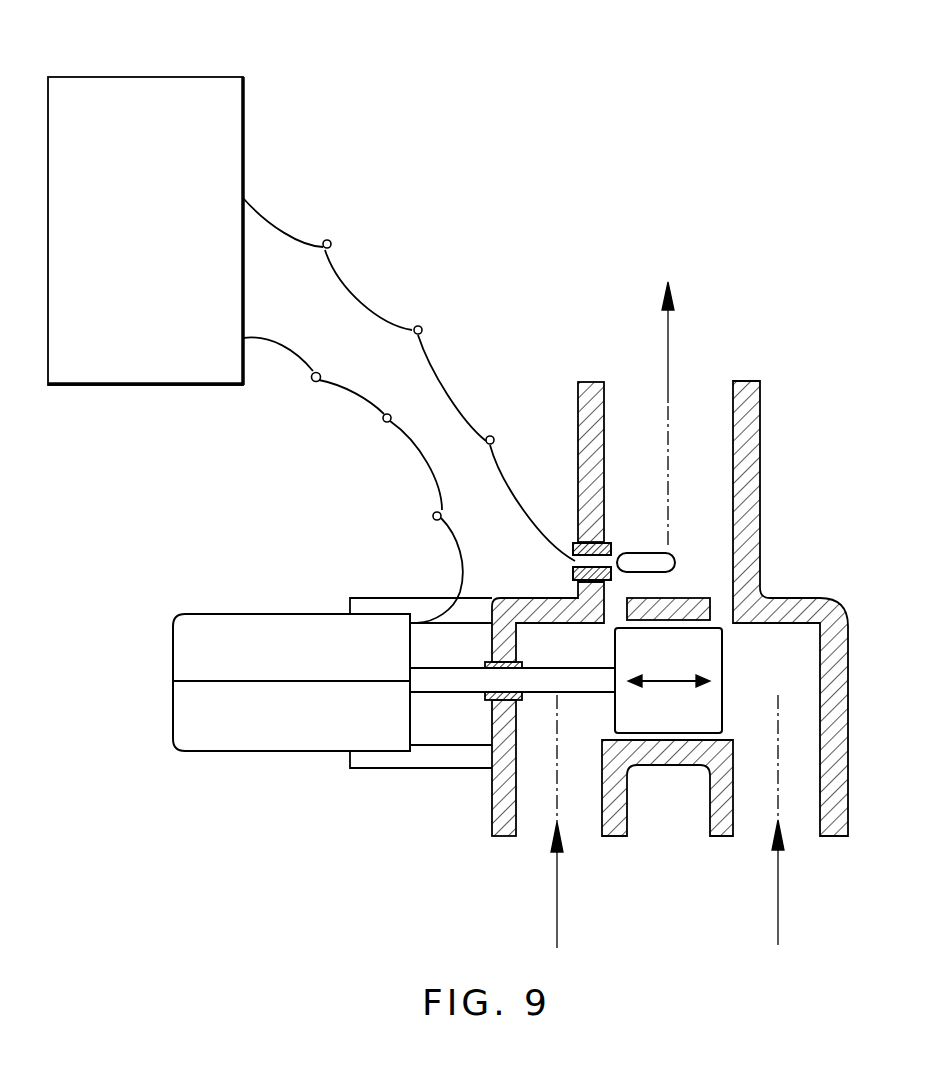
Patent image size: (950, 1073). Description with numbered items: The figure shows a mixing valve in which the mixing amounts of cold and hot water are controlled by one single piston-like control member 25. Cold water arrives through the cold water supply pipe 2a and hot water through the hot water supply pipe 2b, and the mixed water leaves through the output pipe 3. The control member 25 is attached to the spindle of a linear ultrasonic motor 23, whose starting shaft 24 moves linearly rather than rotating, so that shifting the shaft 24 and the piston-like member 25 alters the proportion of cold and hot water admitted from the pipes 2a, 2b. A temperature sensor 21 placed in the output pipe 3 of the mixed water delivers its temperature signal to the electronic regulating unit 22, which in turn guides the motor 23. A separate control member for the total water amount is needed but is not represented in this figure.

The electronic regulating unit 22 is at (48, 97).
The output pipe 3 is at (700, 425).
The temperature sensor 21 is at (635, 553).
The piston-like control member 25 is at (724, 658).
The motor 23 is at (266, 620).
The starting shaft 24 is at (462, 698).
The cold water supply pipe 2a is at (530, 798).
The hot water supply pipe 2b is at (805, 792).